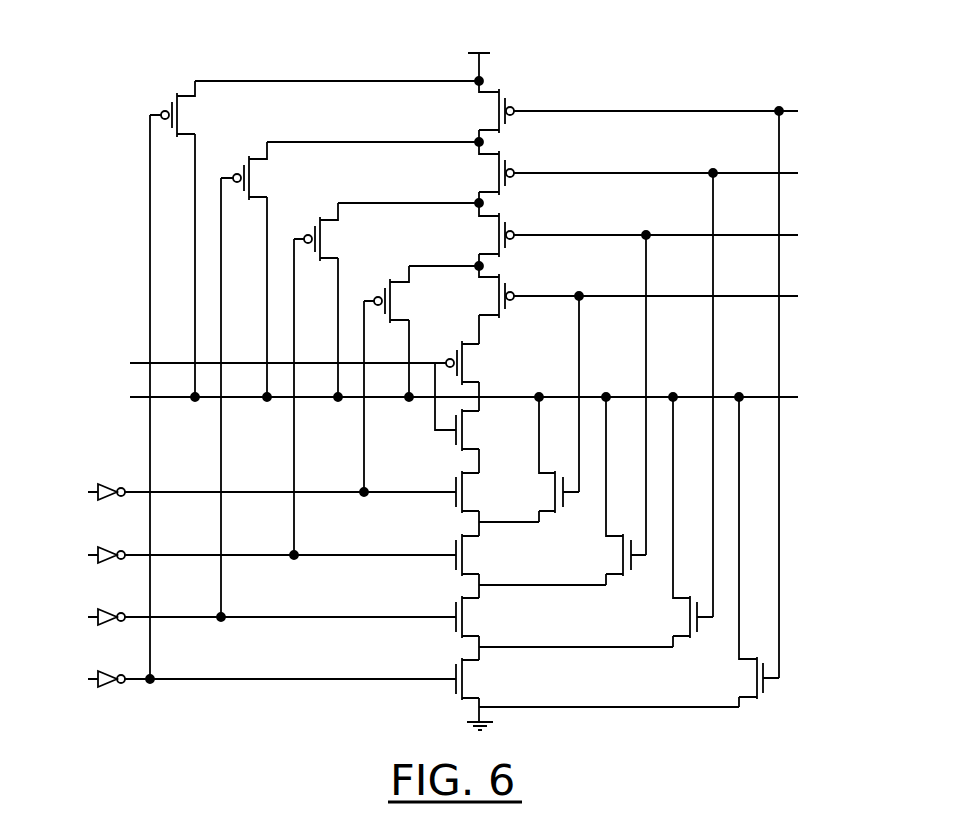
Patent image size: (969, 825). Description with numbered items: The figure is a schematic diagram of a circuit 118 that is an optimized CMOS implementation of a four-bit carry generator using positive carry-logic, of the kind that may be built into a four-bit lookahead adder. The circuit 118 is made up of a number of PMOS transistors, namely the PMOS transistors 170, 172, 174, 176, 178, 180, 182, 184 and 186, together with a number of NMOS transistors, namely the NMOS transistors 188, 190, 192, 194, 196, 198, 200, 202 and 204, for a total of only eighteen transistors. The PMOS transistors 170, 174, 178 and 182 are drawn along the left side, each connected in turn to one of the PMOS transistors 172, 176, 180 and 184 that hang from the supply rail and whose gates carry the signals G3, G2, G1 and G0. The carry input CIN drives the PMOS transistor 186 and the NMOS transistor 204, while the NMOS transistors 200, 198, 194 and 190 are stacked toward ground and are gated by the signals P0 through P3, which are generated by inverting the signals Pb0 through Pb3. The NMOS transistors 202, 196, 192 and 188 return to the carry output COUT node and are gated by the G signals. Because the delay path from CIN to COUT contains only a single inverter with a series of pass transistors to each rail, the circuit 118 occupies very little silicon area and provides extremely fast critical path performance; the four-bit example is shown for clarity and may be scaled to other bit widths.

The circuit 118 is at (320, 50).
The PMOS transistor 170 is at (195, 113).
The PMOS transistor 172 is at (479, 119).
The PMOS transistor 174 is at (265, 175).
The PMOS transistor 176 is at (479, 182).
The PMOS transistor 178 is at (337, 238).
The PMOS transistor 180 is at (479, 242).
The PMOS transistor 182 is at (408, 298).
The PMOS transistor 184 is at (479, 304).
The PMOS transistor 186 is at (477, 363).
The NMOS transistor 188 is at (740, 683).
The NMOS transistor 190 is at (480, 670).
The NMOS transistor 192 is at (675, 623).
The NMOS transistor 194 is at (480, 608).
The NMOS transistor 196 is at (613, 558).
The NMOS transistor 198 is at (480, 548).
The NMOS transistor 200 is at (480, 487).
The NMOS transistor 202 is at (537, 487).
The NMOS transistor 204 is at (449, 437).